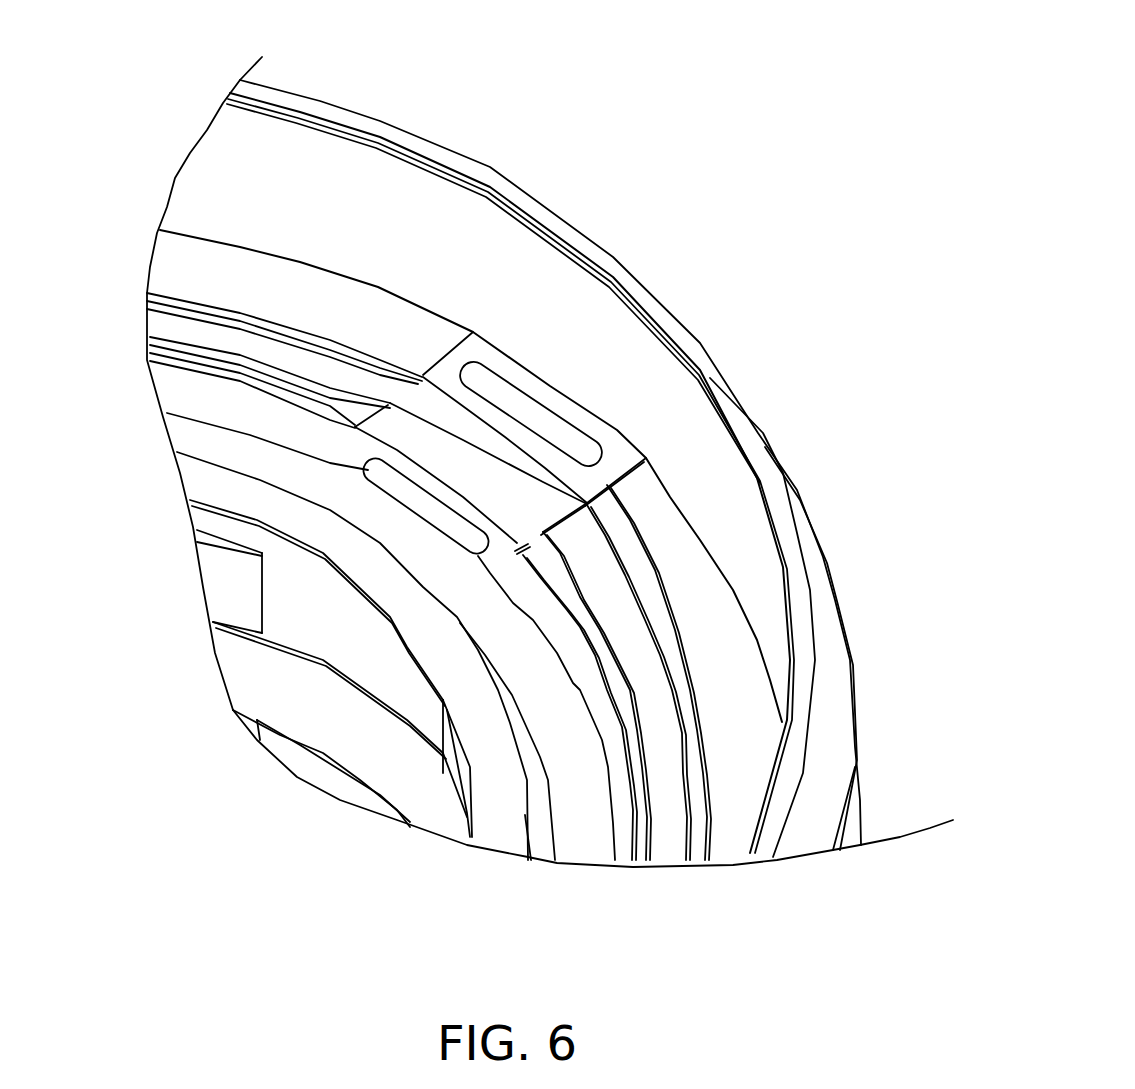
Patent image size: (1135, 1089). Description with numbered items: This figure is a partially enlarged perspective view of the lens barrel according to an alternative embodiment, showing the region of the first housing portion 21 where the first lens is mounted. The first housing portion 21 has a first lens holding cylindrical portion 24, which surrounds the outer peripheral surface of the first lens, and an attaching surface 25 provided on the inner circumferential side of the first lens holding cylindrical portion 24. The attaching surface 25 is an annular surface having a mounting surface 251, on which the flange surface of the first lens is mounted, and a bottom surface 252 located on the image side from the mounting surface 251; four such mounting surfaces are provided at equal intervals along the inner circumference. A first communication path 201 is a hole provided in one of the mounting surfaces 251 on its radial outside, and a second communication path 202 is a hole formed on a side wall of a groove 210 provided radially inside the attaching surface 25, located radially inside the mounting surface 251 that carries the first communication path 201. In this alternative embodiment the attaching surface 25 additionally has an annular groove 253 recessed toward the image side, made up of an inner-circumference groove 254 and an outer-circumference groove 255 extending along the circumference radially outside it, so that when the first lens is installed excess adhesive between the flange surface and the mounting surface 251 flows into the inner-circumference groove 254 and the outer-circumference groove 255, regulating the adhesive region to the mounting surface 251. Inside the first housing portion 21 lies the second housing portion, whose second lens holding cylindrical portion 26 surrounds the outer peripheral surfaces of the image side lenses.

The first housing portion 21 is at (556, 82).
The first lens holding cylindrical portion 24 is at (493, 185).
The attaching surface 25 is at (305, 300).
The bottom surface 252 is at (420, 333).
The first communication path 201 is at (567, 432).
The mounting surface 251 is at (617, 462).
The annular groove 253 is at (162, 128).
The inner-circumference groove 254 is at (200, 347).
The outer-circumference groove 255 is at (230, 323).
The second communication path 202 is at (456, 520).
The groove 210 is at (575, 782).
The second lens holding cylindrical portion 26 is at (360, 662).